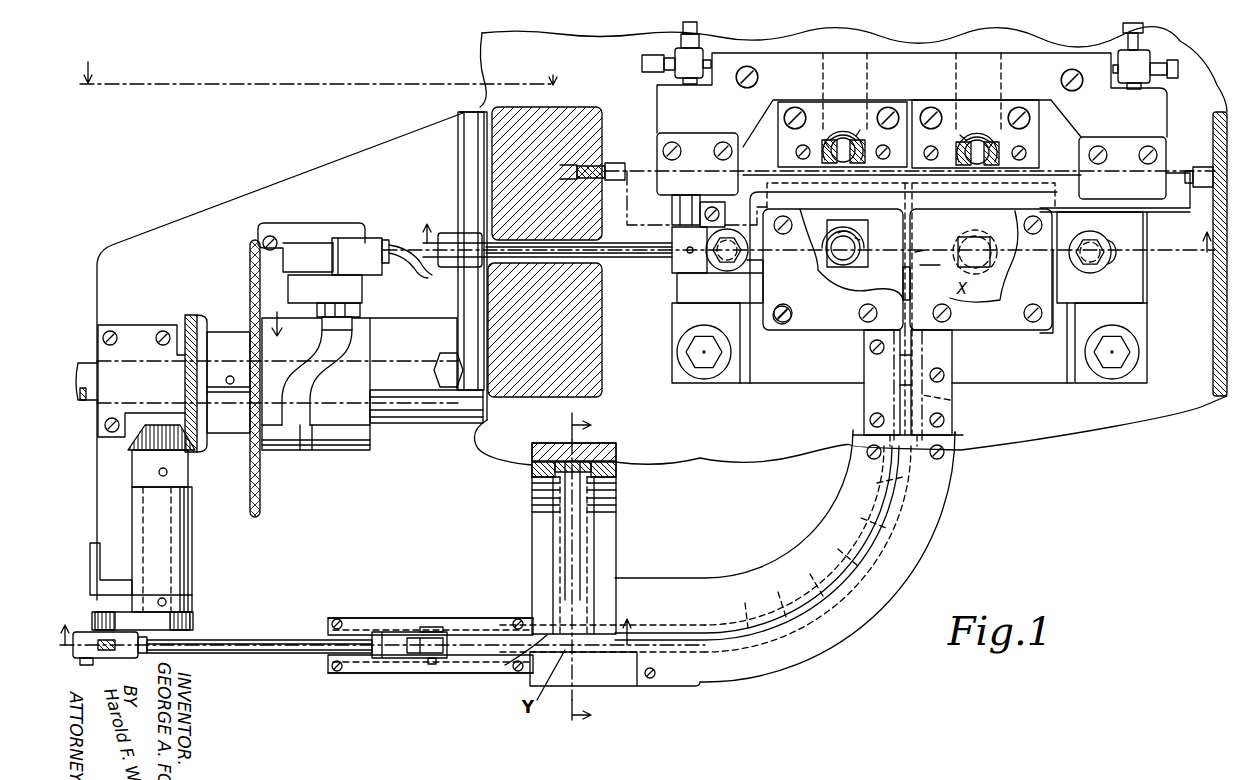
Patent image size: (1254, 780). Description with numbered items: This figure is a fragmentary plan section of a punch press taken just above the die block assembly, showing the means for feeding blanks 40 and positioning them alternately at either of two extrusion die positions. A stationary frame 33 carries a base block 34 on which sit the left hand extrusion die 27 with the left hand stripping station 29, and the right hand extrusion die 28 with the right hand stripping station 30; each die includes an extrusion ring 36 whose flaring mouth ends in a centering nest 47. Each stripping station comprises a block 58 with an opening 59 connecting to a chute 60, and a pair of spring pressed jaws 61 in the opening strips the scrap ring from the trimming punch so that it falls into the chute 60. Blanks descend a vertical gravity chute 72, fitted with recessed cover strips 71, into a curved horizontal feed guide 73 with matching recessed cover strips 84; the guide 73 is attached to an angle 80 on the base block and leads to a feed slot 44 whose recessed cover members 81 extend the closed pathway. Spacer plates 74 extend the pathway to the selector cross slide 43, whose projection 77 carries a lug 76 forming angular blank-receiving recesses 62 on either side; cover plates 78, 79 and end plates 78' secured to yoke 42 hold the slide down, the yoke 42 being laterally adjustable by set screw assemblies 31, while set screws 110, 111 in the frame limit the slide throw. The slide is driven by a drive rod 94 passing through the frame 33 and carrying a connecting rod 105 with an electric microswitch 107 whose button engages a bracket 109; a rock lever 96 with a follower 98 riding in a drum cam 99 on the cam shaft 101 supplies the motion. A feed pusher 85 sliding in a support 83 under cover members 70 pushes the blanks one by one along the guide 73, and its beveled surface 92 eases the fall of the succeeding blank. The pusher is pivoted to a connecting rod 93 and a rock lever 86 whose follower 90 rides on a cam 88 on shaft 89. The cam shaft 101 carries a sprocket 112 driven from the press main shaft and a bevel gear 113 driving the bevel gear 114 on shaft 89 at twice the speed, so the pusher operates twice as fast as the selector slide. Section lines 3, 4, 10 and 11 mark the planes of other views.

The stationary frame 33 is at (500, 98).
The yoke 42 is at (905, 60).
The set screw assemblies 31 is at (683, 30).
The chute 60 is at (822, 83).
The end plates 78' is at (910, 151).
The block 58 is at (778, 145).
The left hand stripping apparatus 29 is at (833, 125).
The right hand stripping apparatus 30 is at (965, 125).
The opening 59 is at (862, 133).
The spring pressed jaws 61 is at (825, 142).
The selector cross slide 43 is at (685, 217).
The set screw 110 is at (614, 163).
The set screw 111 is at (1198, 167).
The projection 77 is at (925, 215).
The spacer plates 74 is at (1005, 220).
The left hand extrusion die 27 is at (832, 224).
The right hand extrusion die 28 is at (960, 222).
The extrusion ring 36 is at (855, 233).
The centering nest 47 is at (860, 240).
The blank-receiving recess 62 is at (915, 252).
The lug 76 is at (942, 268).
The blank 40 is at (893, 300).
The base block 34 is at (678, 322).
The cover plate 78 is at (907, 287).
The cover plate 79 is at (1008, 325).
The angle 80 is at (862, 393).
The recessed cover members 81 is at (866, 405).
The feed slot 44 is at (950, 400).
The curved horizontal feed guide 73 is at (793, 535).
The recessed cover strips 84 is at (742, 582).
The recessed cover strips 71 is at (615, 498).
The gravity chute 72 is at (528, 480).
The drive rod 94 is at (612, 258).
The cam shaft 101 is at (432, 425).
The connecting rod 105 is at (302, 238).
The bracket 109 is at (368, 240).
The electric microswitch 107 is at (388, 240).
The rock lever 96 is at (362, 296).
The follower 98 is at (372, 322).
The drum cam 99 is at (332, 432).
The bevel gear 113 is at (192, 318).
The bevel gear 114 is at (132, 445).
The sprocket 112 is at (262, 486).
The shaft 89 is at (140, 536).
The follower 90 is at (105, 585).
The rock lever 86 is at (82, 630).
The cam 88 is at (195, 612).
The connecting rod 93 is at (258, 638).
The support 83 is at (410, 632).
The feed pusher 85 is at (478, 620).
The cover members 70 is at (365, 620).
The beveled surface 92 is at (505, 665).
The section line 11 is at (319, 62).
The section line 3 is at (816, 227).
The section line 4 is at (590, 569).
The section line 10 is at (379, 620).